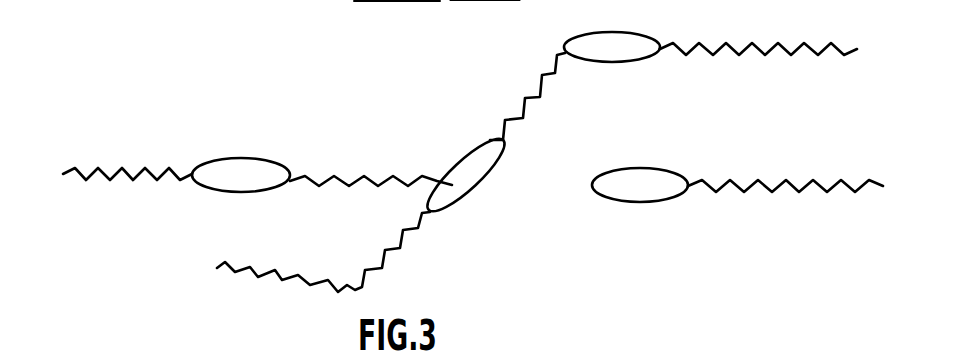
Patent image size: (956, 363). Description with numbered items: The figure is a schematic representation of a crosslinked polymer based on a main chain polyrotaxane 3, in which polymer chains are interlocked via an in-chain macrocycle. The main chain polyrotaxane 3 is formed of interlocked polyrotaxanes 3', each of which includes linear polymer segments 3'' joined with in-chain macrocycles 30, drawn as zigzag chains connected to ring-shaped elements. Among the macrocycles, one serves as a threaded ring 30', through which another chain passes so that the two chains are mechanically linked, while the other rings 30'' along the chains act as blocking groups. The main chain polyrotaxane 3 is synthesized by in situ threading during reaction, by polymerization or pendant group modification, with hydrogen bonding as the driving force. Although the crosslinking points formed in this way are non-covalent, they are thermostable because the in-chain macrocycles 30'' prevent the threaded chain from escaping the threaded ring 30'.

The main chain polyrotaxane 3 is at (655, 150).
The interlocked polyrotaxane 3' is at (785, 160).
The linear polymer segment 3'' is at (371, 157).
The in-chain macrocycle 30 is at (623, 36).
The threaded ring 30' is at (488, 168).
The blocking-group ring 30'' is at (457, 169).